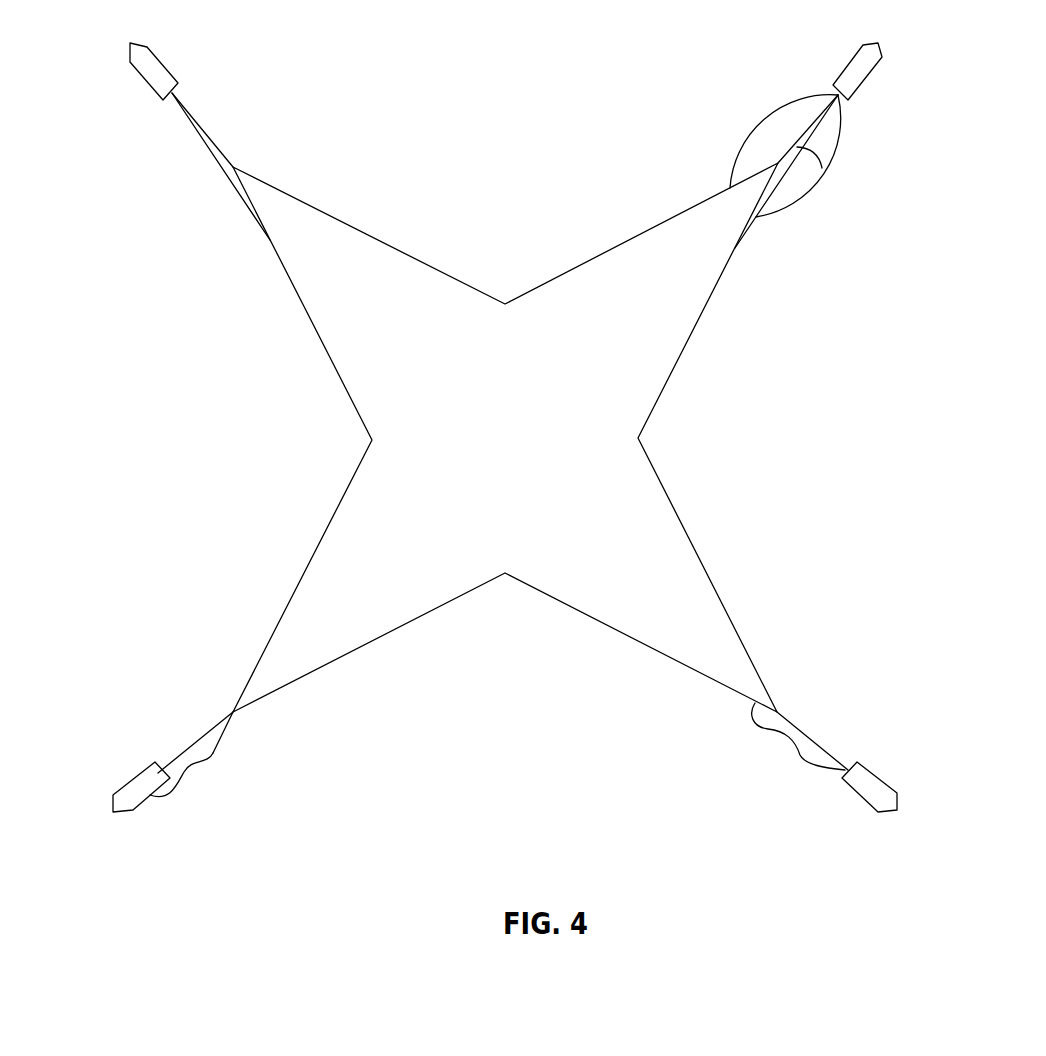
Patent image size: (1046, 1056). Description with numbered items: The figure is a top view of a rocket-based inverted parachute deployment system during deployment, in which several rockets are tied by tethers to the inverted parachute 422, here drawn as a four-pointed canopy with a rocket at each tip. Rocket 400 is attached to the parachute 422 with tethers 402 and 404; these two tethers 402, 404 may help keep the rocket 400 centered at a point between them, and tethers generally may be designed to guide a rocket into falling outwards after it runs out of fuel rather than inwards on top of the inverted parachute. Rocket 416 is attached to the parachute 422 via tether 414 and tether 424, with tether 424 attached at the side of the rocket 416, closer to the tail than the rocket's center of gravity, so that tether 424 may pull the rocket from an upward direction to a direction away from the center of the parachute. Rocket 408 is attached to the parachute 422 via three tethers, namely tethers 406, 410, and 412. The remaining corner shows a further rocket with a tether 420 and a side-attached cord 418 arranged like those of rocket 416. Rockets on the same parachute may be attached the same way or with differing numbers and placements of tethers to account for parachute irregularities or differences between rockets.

The rocket 400 is at (130, 52).
The tether 402 is at (207, 143).
The tether 404 is at (215, 135).
The tether 406 is at (765, 117).
The rocket 408 is at (847, 65).
The tether 410 is at (838, 133).
The tether 412 is at (823, 168).
The tether 414 is at (187, 748).
The rocket 416 is at (135, 778).
The elastic cord 418 is at (822, 770).
The tie-down line 420 is at (805, 726).
The parachute 422 is at (877, 777).
The tether 424 is at (225, 738).